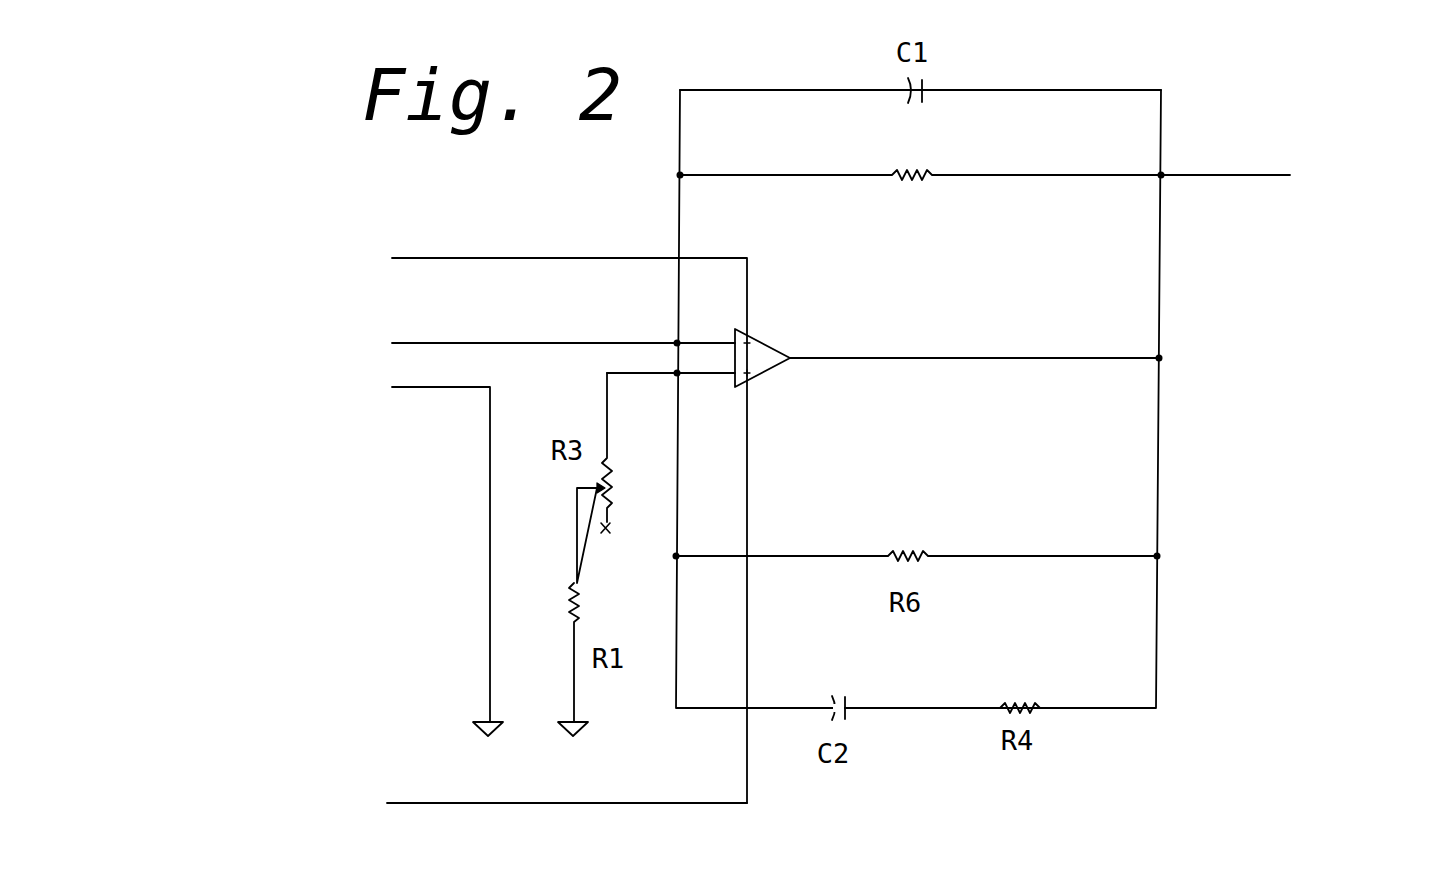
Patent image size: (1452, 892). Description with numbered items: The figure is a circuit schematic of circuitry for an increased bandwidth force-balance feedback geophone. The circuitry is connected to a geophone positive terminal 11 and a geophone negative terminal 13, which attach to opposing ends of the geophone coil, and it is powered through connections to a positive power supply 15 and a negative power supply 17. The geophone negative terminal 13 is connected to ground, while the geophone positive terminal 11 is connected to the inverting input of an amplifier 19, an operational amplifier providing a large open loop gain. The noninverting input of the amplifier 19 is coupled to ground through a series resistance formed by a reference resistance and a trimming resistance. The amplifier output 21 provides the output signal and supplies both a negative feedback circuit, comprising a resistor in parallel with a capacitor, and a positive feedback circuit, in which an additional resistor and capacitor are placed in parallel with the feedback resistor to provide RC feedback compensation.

The geophone positive terminal 11 is at (480, 343).
The geophone negative terminal 13 is at (456, 388).
The positive power supply 15 is at (515, 258).
The negative power supply 17 is at (483, 805).
The amplifier 19 is at (766, 341).
The amplifier output 21 is at (1254, 179).